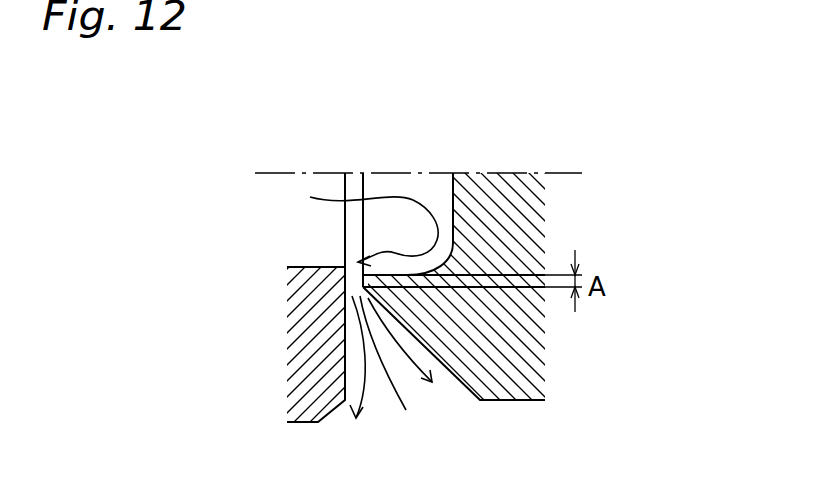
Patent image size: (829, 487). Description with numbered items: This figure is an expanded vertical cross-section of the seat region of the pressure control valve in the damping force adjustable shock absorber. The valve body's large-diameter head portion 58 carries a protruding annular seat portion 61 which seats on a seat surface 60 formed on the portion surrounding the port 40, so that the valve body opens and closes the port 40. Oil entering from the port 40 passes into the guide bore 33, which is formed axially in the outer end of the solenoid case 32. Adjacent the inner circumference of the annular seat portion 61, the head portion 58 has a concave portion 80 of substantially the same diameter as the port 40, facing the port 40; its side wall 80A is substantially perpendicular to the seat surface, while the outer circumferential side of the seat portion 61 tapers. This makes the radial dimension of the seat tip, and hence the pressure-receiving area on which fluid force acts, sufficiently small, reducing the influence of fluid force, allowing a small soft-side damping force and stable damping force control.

The port 40 is at (326, 195).
The concave portion 80 is at (453, 197).
The side wall of the concave portion 80A is at (445, 262).
The annular seat portion 61 is at (343, 278).
The solenoid case 32 is at (305, 377).
The seat surface 60 is at (391, 371).
The guide bore 33 is at (440, 390).
The head portion 58 is at (517, 388).